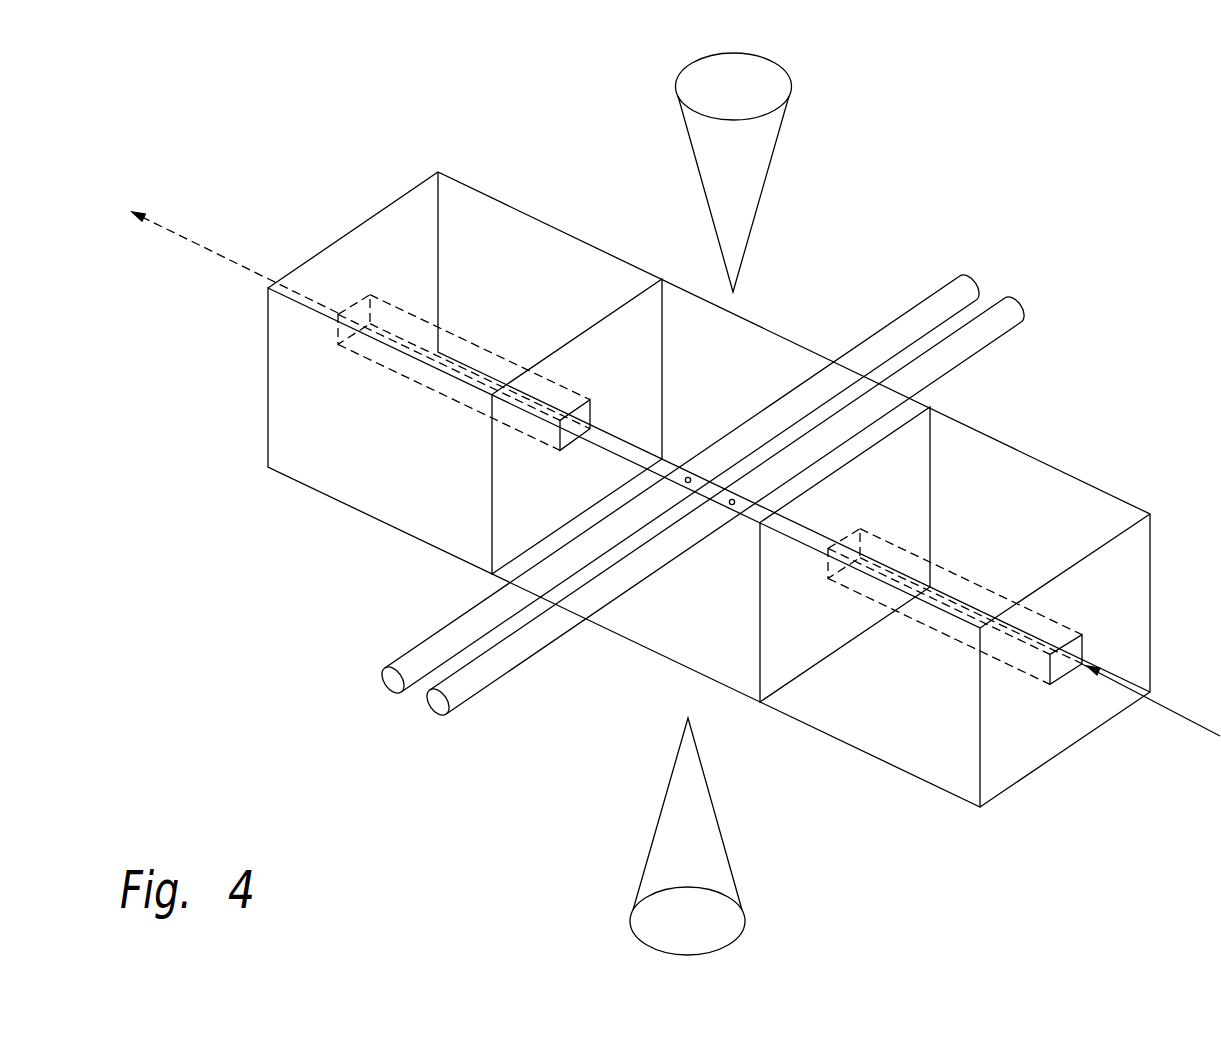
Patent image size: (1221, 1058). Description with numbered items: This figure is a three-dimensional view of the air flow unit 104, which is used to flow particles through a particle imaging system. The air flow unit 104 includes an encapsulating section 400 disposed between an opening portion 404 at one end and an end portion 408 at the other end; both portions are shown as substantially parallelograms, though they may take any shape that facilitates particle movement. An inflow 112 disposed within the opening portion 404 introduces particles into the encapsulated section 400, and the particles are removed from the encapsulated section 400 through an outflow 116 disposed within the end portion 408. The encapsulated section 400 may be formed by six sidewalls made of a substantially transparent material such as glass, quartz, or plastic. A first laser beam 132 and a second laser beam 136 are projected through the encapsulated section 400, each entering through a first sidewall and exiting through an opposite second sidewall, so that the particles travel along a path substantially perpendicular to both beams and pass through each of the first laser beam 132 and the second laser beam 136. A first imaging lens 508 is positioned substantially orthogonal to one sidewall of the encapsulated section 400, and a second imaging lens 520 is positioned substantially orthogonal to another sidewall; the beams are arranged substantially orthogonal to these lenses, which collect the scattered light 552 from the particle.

The air flow unit 104 is at (1084, 266).
The inflow 112 is at (1118, 623).
The outflow 116 is at (302, 370).
The first laser beam 132 is at (497, 683).
The second laser beam 136 is at (435, 633).
The encapsulating section 400 is at (770, 317).
The opening portion 404 is at (1041, 460).
The end portion 408 is at (549, 224).
The first imaging lens 508 is at (653, 930).
The second imaging lens 520 is at (763, 73).
The scattered light 552 is at (765, 180).